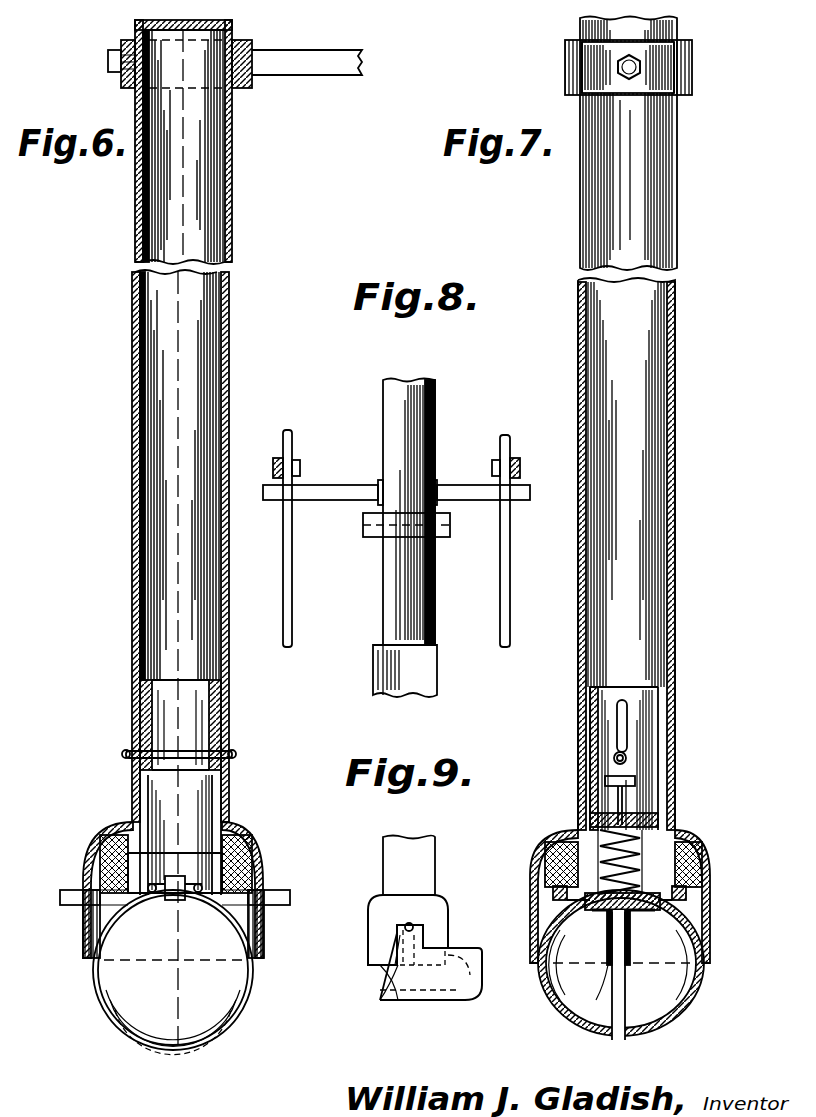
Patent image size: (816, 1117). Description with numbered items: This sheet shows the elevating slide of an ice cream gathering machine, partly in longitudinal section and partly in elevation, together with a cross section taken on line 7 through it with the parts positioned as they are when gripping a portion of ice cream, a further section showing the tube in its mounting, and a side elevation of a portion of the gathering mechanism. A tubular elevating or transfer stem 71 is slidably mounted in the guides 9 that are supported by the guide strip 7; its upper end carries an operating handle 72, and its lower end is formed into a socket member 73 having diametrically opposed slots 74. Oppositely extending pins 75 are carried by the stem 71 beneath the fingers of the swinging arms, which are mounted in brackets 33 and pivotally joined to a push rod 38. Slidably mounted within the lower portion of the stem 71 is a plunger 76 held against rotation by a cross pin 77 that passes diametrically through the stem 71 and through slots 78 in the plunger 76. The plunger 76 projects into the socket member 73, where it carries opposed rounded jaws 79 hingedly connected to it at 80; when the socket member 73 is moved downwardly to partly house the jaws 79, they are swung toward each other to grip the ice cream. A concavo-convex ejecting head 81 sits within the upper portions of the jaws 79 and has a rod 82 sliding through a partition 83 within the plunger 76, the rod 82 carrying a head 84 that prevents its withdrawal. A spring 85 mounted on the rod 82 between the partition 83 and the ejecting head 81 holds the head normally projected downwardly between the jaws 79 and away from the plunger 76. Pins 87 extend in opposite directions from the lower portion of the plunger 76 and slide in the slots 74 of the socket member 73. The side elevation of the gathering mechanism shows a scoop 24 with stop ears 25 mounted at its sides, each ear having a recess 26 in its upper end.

In FIG. 6, the guide strip 7 is at (173, 1068).
In FIG. 8, the guides 9 is at (376, 672).
In FIG. 9, the scoop 24 is at (476, 965).
In FIG. 9, the stop ears 25 is at (398, 963).
In FIG. 9, the recess 26 is at (397, 940).
In FIG. 8, the brackets 33 is at (278, 458).
In FIG. 8, the push rod 38 is at (288, 615).
In FIG. 6, the tubular elevating or transfer stem 71 is at (213, 198).
In FIG. 7, the tubular elevating or transfer stem 71 is at (660, 192).
In FIG. 8, the tubular elevating or transfer stem 71 is at (412, 422).
In FIG. 9, the tubular elevating or transfer stem 71 is at (428, 866).
In FIG. 6, the operating handle 72 is at (305, 62).
In FIG. 7, the operating handle 72 is at (693, 73).
In FIG. 6, the socket member 73 is at (262, 860).
In FIG. 7, the socket member 73 is at (711, 868).
In FIG. 9, the socket member 73 is at (370, 910).
In FIG. 6, the slots 74 is at (85, 925).
In FIG. 7, the slots 74 is at (593, 982).
In FIG. 9, the slots 74 is at (412, 947).
In FIG. 8, the pins 75 is at (333, 490).
In FIG. 6, the plunger 76 is at (188, 798).
In FIG. 7, the plunger 76 is at (640, 790).
In FIG. 6, the cross pin 77 is at (176, 751).
In FIG. 7, the cross pin 77 is at (626, 755).
In FIG. 6, the slots 78 is at (140, 716).
In FIG. 7, the slots 78 is at (628, 720).
In FIG. 6, the rounded jaws 79 is at (222, 985).
In FIG. 7, the rounded jaws 79 is at (668, 983).
In FIG. 9, the rounded jaws 79 is at (402, 1002).
In FIG. 6, the hinge connection 80 is at (170, 896).
In FIG. 7, the hinge connection 80 is at (688, 900).
In FIG. 7, the concavo-convex ejecting head 81 is at (643, 918).
In FIG. 7, the rod 82 is at (624, 805).
In FIG. 7, the partition 83 is at (660, 822).
In FIG. 7, the head 84 is at (605, 781).
In FIG. 7, the spring 85 is at (578, 832).
In FIG. 6, the pins 87 is at (60, 892).
In FIG. 7, the pins 87 is at (608, 915).
In FIG. 9, the pins 87 is at (412, 925).